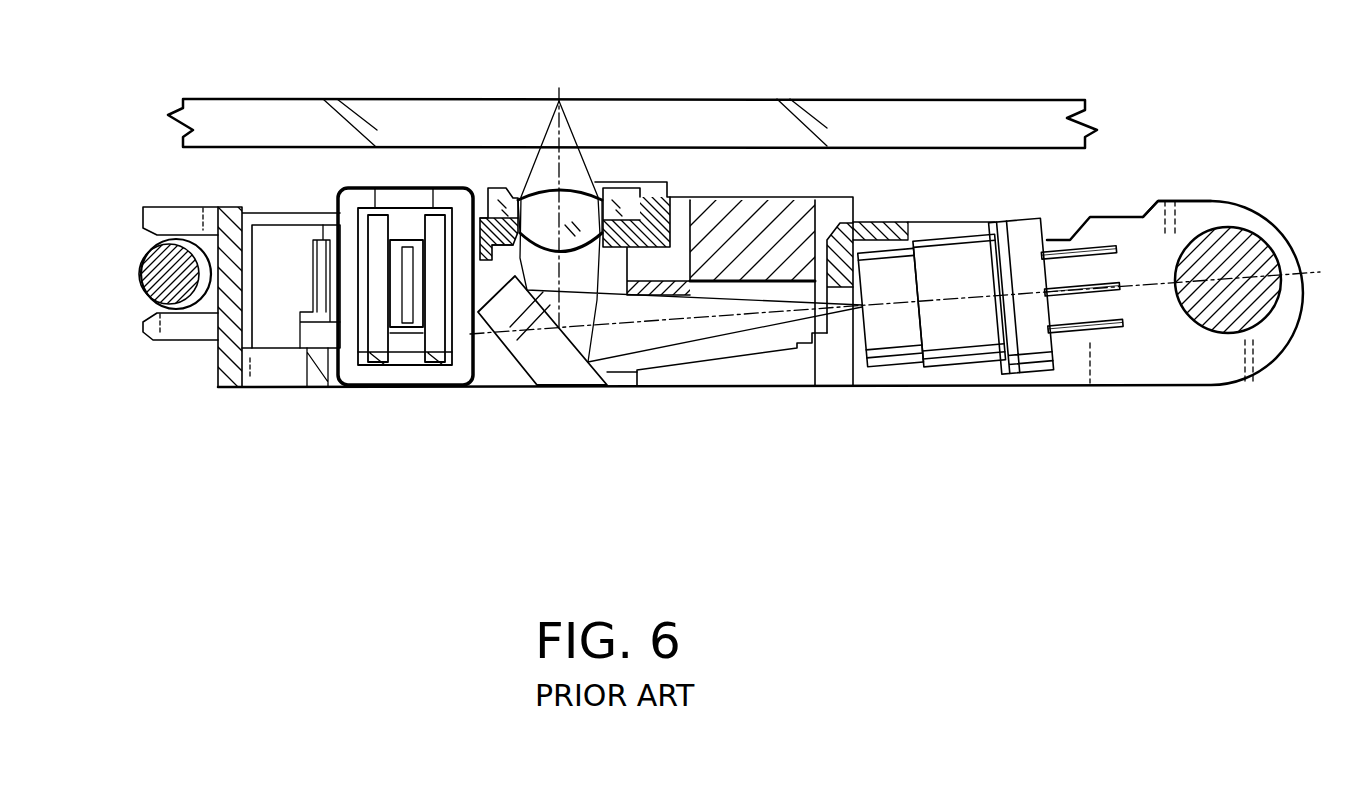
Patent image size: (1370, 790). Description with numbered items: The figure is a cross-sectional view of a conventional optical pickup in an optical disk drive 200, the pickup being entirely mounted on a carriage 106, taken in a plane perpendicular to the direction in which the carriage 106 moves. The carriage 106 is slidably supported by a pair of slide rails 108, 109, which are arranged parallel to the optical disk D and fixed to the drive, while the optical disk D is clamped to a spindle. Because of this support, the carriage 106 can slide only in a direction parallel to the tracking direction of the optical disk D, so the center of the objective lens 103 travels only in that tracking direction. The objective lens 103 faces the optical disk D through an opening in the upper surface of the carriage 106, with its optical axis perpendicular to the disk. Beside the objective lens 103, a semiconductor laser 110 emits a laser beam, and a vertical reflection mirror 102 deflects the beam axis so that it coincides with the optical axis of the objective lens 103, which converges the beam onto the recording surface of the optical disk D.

The optical disk D is at (290, 108).
The vertical reflection mirror 102 is at (520, 372).
The objective lens 103 is at (578, 203).
The carriage 106 is at (1212, 155).
The slide rail 108 is at (1260, 255).
The slide rail 109 is at (150, 273).
The semiconductor laser 110 is at (1033, 182).
The optical disk drive 200 is at (979, 432).